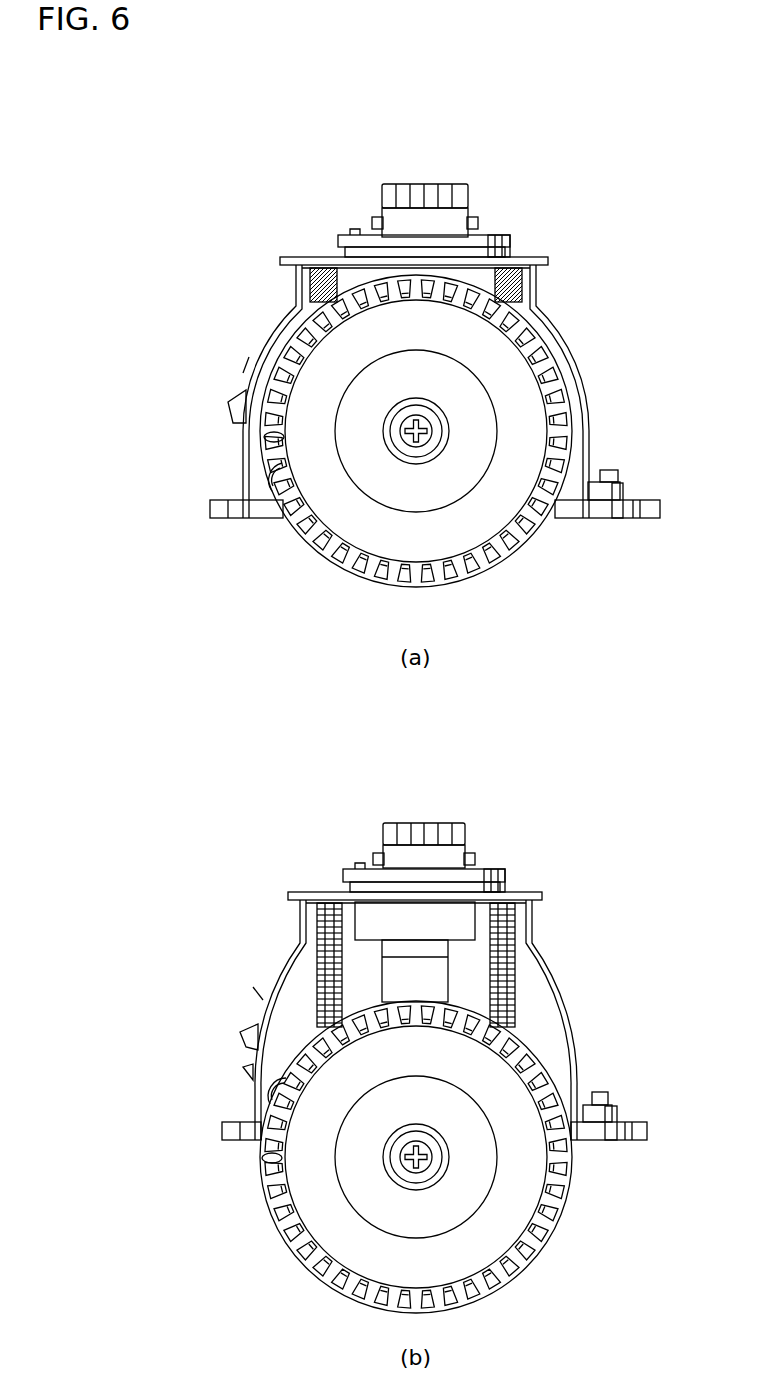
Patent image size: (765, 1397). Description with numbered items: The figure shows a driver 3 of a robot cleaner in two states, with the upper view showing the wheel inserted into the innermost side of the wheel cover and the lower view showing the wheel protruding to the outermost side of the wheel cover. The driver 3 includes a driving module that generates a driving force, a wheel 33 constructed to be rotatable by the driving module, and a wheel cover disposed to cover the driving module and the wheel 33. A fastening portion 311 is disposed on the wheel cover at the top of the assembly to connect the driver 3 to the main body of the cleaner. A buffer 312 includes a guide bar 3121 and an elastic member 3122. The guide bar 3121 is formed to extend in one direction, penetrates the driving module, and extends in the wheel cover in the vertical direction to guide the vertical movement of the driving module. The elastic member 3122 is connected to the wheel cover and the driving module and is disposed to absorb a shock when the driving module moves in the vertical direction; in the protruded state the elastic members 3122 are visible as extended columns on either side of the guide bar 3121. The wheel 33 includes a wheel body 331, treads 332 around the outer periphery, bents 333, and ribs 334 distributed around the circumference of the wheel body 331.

The driver 3 is at (606, 162).
The fastening portion 311 is at (441, 184).
The buffer 312 is at (613, 913).
The guide bar 3121 is at (528, 926).
The elastic member 3122 is at (521, 290).
The wheel 33 is at (272, 541).
The wheel body 331 is at (247, 452).
The tread 332 is at (338, 574).
The bent 333 is at (266, 433).
The rib 334 is at (307, 552).